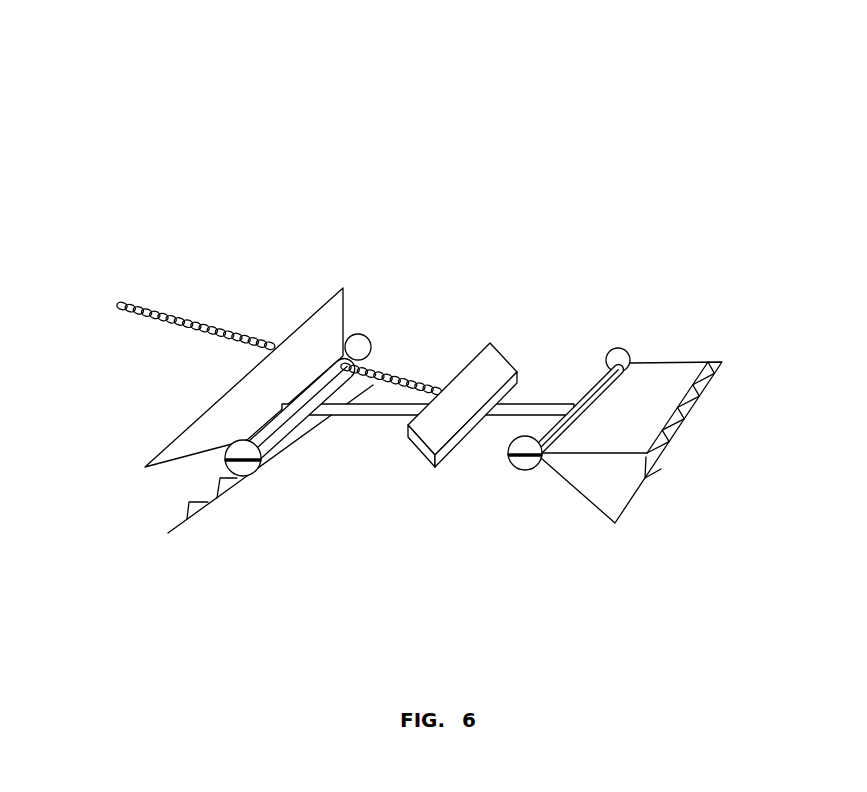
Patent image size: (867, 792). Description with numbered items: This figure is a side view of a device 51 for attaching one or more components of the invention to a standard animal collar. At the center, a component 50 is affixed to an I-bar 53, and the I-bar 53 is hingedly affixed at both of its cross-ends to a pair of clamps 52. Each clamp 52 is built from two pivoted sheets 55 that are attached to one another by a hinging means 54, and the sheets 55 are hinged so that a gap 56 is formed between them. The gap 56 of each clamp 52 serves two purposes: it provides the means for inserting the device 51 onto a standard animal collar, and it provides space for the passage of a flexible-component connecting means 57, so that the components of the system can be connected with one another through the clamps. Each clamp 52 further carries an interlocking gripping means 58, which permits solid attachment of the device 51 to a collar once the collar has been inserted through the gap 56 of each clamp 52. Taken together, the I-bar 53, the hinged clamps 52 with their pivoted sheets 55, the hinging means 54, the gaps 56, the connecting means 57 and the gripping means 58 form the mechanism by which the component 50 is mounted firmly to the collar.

The component 50 is at (467, 365).
The device 51 is at (408, 180).
The clamp 52 is at (698, 337).
The I-bar 53 is at (372, 418).
The hinging means 54 is at (368, 303).
The pivoted sheet 55 is at (580, 500).
The gap 56 is at (278, 442).
The flexible-component connecting means 57 is at (220, 325).
The interlocking gripping means 58 is at (188, 517).